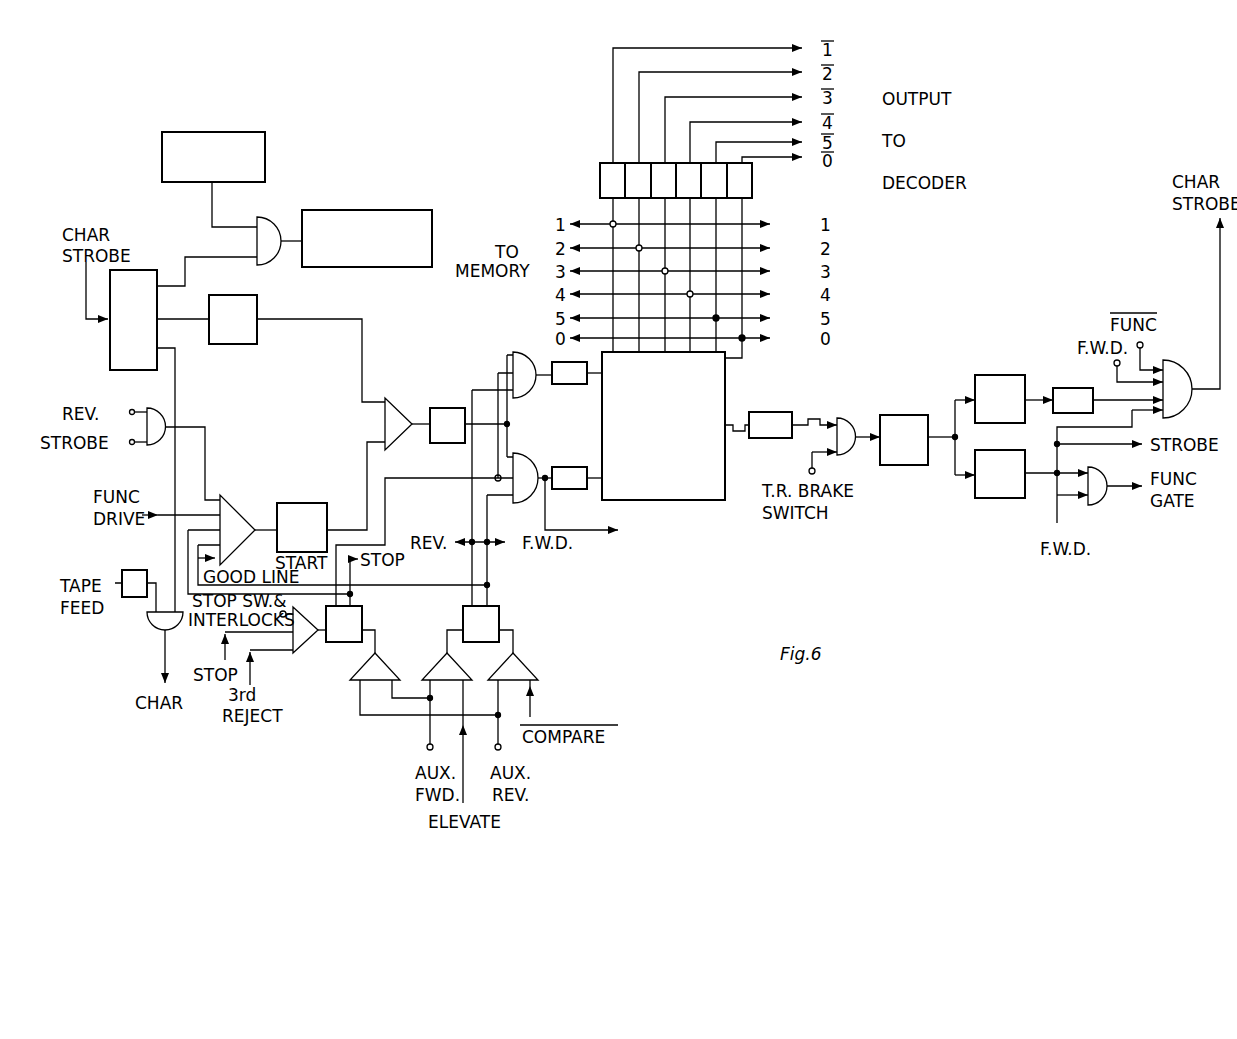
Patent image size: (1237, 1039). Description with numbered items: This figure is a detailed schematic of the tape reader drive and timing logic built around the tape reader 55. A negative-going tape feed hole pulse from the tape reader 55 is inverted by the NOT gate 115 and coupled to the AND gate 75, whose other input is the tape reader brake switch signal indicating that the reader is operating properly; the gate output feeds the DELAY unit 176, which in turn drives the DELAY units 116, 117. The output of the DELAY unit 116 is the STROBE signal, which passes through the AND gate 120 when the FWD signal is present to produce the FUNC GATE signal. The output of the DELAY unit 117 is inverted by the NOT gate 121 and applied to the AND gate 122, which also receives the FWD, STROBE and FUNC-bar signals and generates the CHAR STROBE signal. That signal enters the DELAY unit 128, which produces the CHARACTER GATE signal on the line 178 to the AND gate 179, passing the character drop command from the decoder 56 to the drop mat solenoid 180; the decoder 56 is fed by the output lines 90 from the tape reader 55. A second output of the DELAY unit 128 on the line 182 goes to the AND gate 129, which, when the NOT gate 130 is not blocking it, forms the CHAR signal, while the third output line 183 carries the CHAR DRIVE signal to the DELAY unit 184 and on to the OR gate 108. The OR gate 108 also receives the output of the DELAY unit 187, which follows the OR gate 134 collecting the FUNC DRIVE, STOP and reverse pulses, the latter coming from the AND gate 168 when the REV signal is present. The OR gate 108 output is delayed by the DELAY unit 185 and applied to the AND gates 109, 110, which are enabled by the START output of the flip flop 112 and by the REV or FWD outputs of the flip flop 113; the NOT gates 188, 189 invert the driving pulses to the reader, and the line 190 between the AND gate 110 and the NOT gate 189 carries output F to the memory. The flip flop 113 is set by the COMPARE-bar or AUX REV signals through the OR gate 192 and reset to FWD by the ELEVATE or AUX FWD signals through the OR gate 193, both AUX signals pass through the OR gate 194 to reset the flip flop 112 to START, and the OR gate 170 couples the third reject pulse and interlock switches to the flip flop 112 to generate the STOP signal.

The decoder 56 is at (222, 178).
The AND gate 179 is at (262, 215).
The drop mat solenoid 180 is at (360, 210).
The DELAY unit 128 is at (140, 270).
The line 178 is at (194, 266).
The third output line 183 is at (206, 318).
The output line 182 is at (178, 374).
The DELAY unit 184 is at (250, 347).
The AND gate 168 is at (152, 405).
The OR gate 134 is at (260, 499).
The DELAY unit 187 is at (290, 503).
The OR gate 108 is at (383, 421).
The DELAY unit 185 is at (443, 406).
The AND gate 109 is at (520, 350).
The NOT gate 188 is at (585, 386).
The AND gate 110 is at (522, 452).
The NOT gate 189 is at (559, 448).
The line 190 is at (591, 532).
The tape reader 55 is at (634, 441).
The NOT gate 115 is at (775, 410).
The AND gate 75 is at (852, 417).
The DELAY unit 176 is at (917, 414).
The DELAY unit 117 is at (1002, 375).
The DELAY unit 116 is at (1005, 498).
The NOT gate 121 is at (1078, 388).
The AND gate 122 is at (1172, 365).
The AND gate 120 is at (1093, 504).
The output lines 90 is at (578, 203).
The NOT gate 130 is at (135, 568).
The AND gate 129 is at (150, 628).
The OR gate 170 is at (300, 648).
The flip flop 112 is at (364, 610).
The flip flop 113 is at (497, 606).
The OR gate 194 is at (352, 681).
The OR gate 193 is at (441, 664).
The OR gate 192 is at (534, 668).